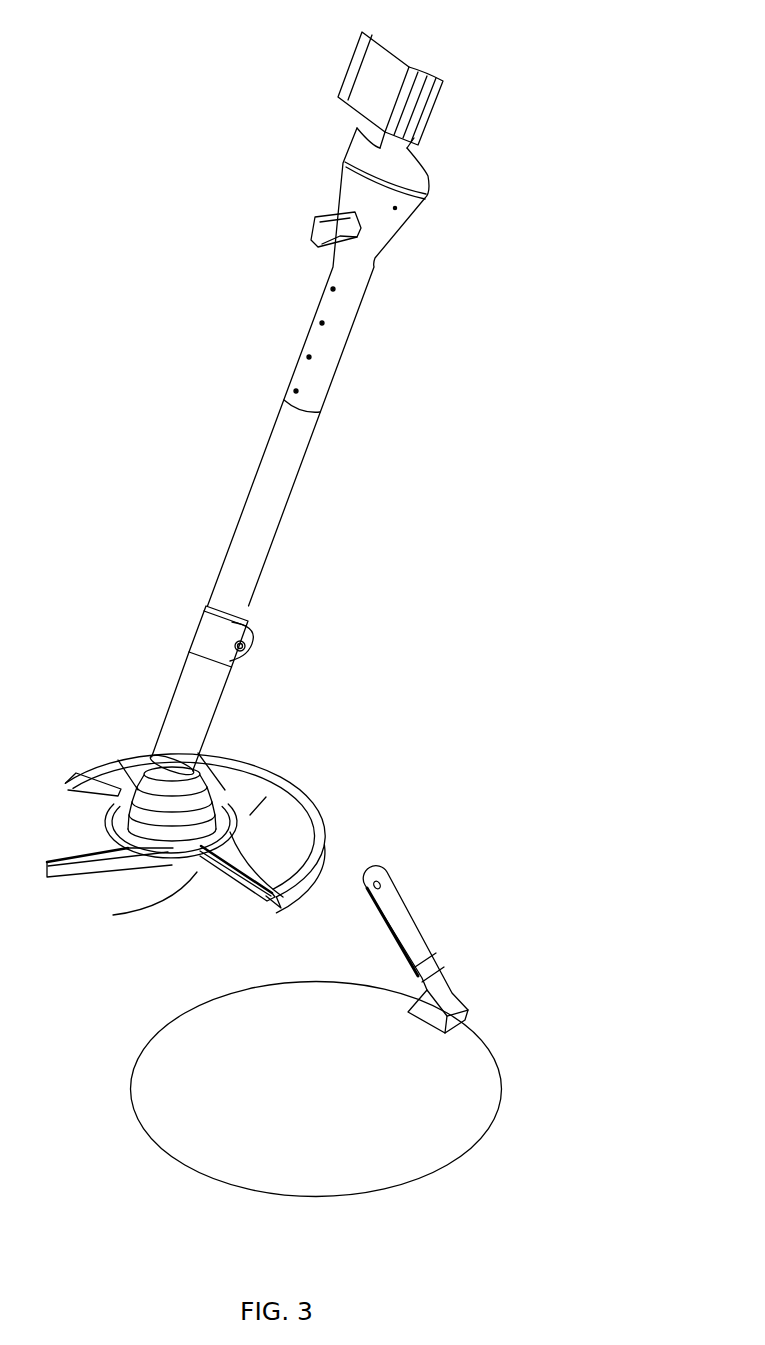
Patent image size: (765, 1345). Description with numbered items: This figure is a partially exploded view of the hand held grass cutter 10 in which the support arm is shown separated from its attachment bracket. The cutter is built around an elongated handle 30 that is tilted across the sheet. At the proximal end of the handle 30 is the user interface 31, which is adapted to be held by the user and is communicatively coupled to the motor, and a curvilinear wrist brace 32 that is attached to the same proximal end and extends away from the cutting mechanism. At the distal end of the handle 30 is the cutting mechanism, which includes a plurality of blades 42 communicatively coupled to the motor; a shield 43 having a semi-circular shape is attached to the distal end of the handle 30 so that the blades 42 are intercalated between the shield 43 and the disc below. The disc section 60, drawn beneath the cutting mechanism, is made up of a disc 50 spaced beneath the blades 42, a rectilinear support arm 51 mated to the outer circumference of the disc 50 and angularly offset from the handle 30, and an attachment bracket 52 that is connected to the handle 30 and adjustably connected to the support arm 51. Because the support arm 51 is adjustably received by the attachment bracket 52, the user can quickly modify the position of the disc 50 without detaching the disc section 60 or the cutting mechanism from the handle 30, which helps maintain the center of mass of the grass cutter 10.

The hand held grass cutter 10 is at (184, 282).
The elongated handle 30 is at (290, 484).
The user interface 31 is at (335, 213).
The curvilinear wrist brace 32 is at (395, 73).
The blades 42 is at (103, 868).
The shield 43 is at (278, 805).
The disc 50 is at (326, 1103).
The rectilinear support arm 51 is at (402, 910).
The attachment bracket 52 is at (207, 632).
The disc section 60 is at (522, 1035).